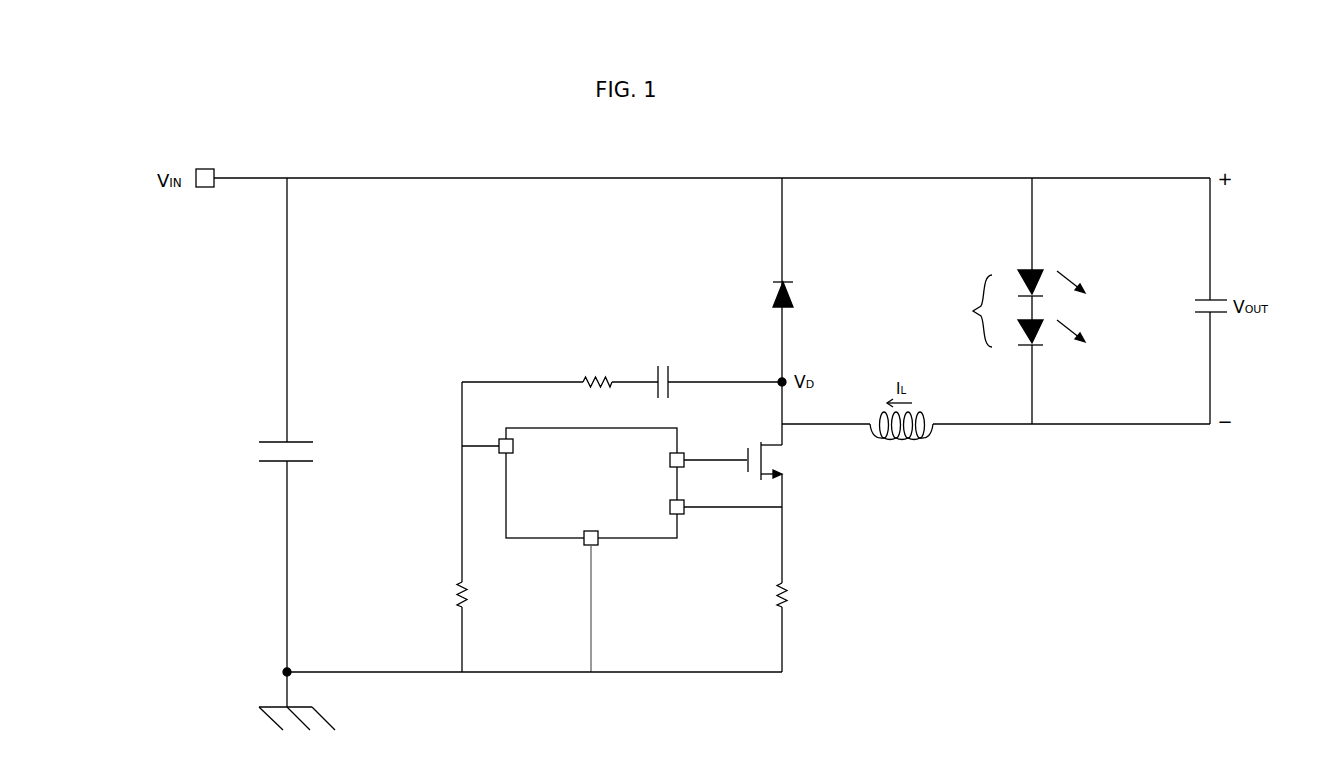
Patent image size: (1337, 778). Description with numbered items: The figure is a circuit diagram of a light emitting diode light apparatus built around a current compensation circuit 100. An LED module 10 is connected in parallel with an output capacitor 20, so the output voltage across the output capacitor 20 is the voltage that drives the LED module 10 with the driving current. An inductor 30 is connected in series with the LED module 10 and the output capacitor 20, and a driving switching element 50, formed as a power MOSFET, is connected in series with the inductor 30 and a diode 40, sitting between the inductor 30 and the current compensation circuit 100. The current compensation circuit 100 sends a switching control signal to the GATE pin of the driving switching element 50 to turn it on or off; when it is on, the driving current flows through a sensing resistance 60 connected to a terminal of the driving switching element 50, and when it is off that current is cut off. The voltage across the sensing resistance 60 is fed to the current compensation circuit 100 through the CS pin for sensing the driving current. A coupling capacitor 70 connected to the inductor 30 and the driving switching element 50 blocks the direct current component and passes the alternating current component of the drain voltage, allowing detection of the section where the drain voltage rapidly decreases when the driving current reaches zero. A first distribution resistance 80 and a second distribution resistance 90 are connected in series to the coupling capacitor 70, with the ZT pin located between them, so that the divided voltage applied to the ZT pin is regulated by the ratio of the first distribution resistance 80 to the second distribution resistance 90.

The LED module 10 is at (978, 276).
The output capacitor 20 is at (1200, 300).
The inductor 30 is at (921, 438).
The diode 40 is at (788, 282).
The driving switching element 50 is at (765, 462).
The sensing resistance 60 is at (788, 604).
The coupling capacitor 70 is at (660, 364).
The first distribution resistance 80 is at (601, 378).
The second distribution resistance 90 is at (458, 606).
The current compensation circuit 100 is at (527, 545).